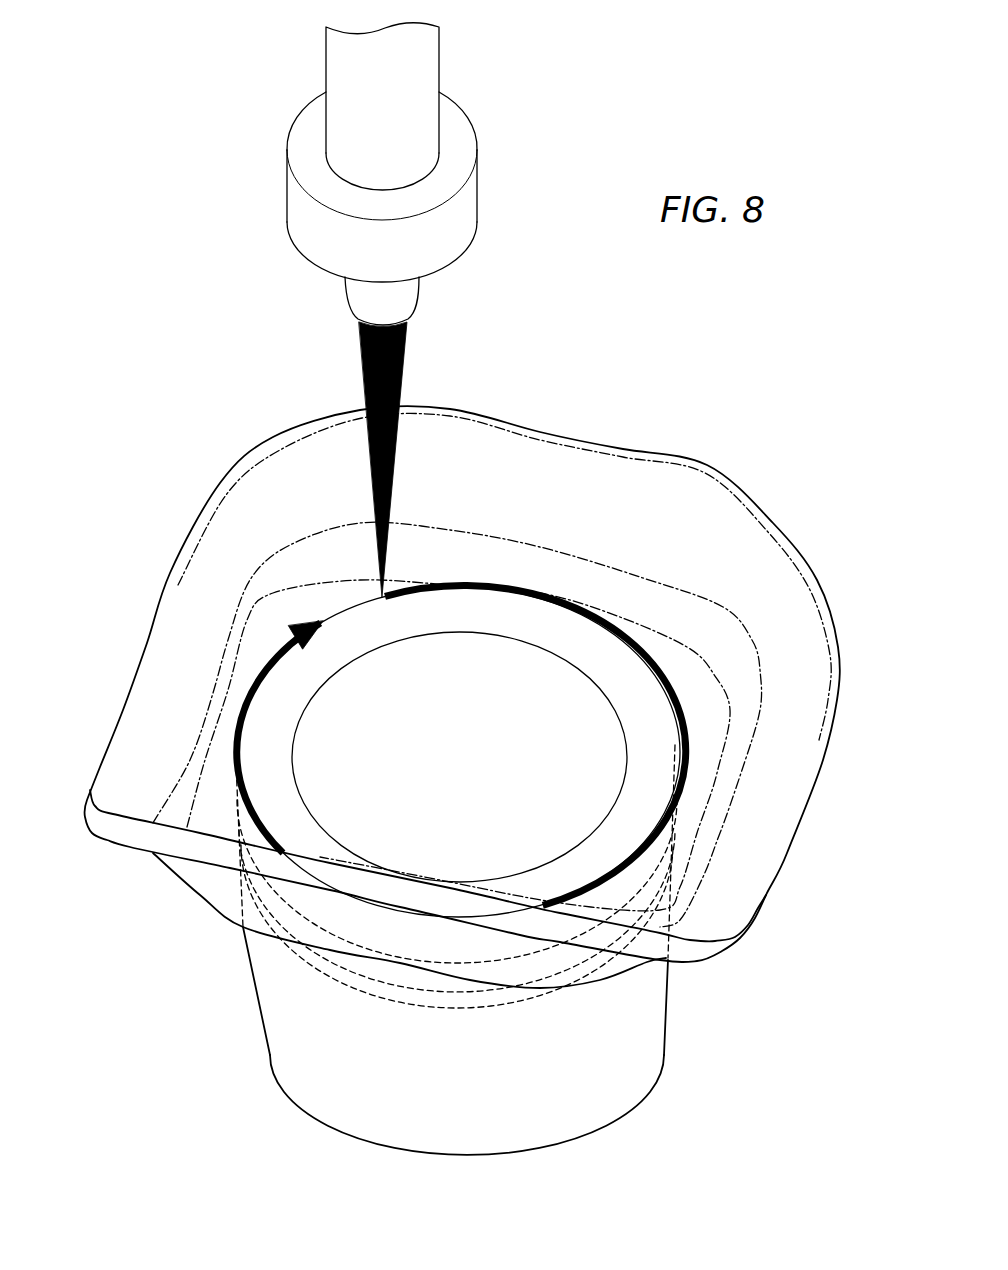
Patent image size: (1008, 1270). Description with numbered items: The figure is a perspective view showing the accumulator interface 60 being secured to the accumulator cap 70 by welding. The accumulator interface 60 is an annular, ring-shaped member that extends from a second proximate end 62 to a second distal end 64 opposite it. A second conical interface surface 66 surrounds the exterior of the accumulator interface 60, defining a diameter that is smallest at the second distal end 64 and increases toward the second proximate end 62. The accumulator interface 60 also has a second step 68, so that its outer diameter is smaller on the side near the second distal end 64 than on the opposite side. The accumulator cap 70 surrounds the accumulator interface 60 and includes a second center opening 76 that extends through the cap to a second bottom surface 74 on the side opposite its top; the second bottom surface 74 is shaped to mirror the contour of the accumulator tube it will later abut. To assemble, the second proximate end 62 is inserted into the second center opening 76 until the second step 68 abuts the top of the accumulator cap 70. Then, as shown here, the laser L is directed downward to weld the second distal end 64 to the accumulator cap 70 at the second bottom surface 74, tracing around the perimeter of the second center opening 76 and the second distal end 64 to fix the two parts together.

The laser L is at (343, 68).
The accumulator interface 60 is at (305, 1053).
The second proximate end 62 is at (550, 627).
The second distal end 64 is at (583, 1125).
The second conical interface surface 66 is at (617, 1027).
The second step 68 is at (243, 927).
The accumulator cap 70 is at (188, 617).
The second bottom surface 74 is at (157, 680).
The second center opening 76 is at (677, 793).